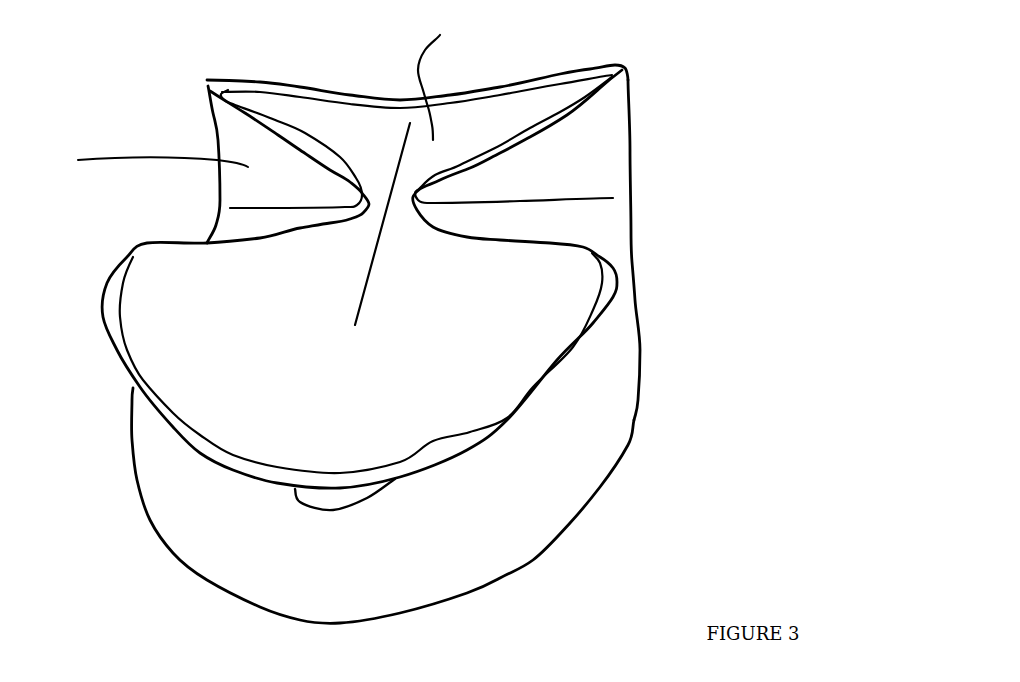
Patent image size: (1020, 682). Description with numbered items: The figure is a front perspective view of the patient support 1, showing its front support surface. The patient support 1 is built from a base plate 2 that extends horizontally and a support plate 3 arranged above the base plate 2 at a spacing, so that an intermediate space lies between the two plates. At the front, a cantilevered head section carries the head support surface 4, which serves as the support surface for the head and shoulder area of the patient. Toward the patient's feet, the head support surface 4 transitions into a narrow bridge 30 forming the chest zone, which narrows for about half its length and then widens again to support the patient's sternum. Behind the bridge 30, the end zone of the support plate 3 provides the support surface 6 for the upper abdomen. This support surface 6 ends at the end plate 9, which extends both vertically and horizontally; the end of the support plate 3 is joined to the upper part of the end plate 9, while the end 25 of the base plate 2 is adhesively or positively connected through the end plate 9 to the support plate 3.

The patient support 1 is at (278, 102).
The base plate 2 is at (230, 530).
The support plate 3 is at (147, 293).
The head support surface 4 is at (143, 432).
The support surface 6 is at (248, 95).
The end plate 9 is at (582, 137).
The end of the base plate 25 is at (333, 127).
The bridge 30 is at (373, 260).